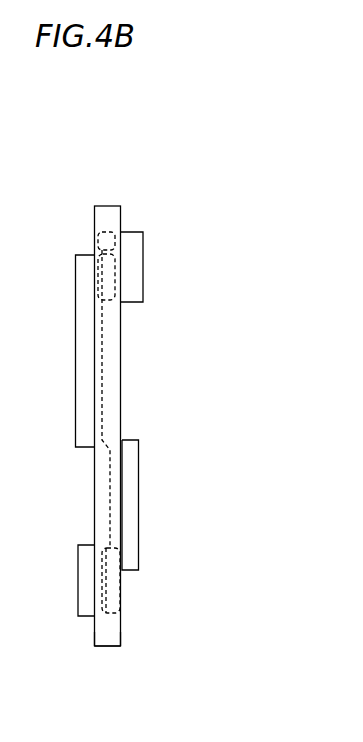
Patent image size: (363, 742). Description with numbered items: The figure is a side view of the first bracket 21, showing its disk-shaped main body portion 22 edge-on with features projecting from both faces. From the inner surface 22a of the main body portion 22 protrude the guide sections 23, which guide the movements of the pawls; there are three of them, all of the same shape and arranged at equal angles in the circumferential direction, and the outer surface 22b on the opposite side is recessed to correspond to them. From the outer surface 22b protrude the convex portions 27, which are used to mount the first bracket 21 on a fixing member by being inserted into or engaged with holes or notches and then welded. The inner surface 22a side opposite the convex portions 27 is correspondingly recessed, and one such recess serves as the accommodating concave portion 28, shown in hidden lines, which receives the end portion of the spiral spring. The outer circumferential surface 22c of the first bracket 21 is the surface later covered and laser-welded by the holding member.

The first bracket 21 is at (168, 187).
The main body portion 22 is at (108, 212).
The inner surface 22a is at (96, 646).
The outer surface 22b is at (121, 646).
The outer circumferential surface 22c is at (108, 647).
The guide section 23 is at (76, 377).
The convex portion 27 is at (143, 283).
The accommodating concave portion 28 is at (97, 240).